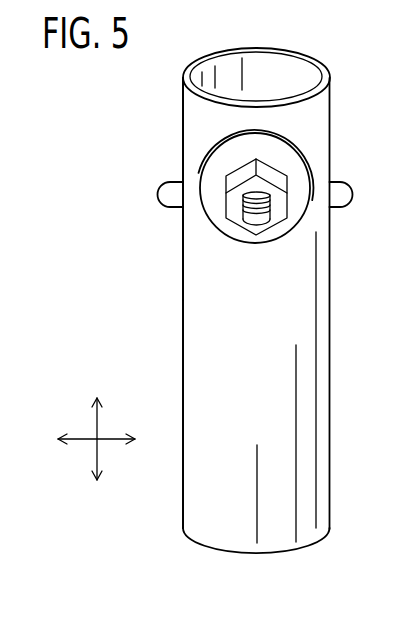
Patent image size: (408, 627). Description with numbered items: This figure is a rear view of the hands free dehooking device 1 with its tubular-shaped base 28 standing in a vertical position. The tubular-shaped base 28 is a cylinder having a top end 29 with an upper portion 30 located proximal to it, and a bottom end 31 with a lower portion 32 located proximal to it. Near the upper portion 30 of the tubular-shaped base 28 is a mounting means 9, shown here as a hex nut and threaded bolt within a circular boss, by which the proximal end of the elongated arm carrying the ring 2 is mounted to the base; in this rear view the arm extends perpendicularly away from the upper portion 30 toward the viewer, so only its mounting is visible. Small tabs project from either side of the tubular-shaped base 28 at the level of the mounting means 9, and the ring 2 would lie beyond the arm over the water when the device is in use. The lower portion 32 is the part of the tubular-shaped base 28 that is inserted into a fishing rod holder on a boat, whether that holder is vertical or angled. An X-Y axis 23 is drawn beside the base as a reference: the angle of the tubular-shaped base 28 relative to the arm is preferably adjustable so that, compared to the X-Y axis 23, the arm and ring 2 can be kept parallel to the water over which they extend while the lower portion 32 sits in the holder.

The hands free dehooking device 1 is at (302, 138).
The ring 2 is at (345, 183).
The mounting means 9 is at (226, 205).
The X-Y axis 23 is at (96, 441).
The tubular-shaped base 28 is at (271, 312).
The top end 29 is at (283, 53).
The upper portion 30 is at (200, 110).
The bottom end 31 is at (214, 547).
The lower portion 32 is at (198, 522).